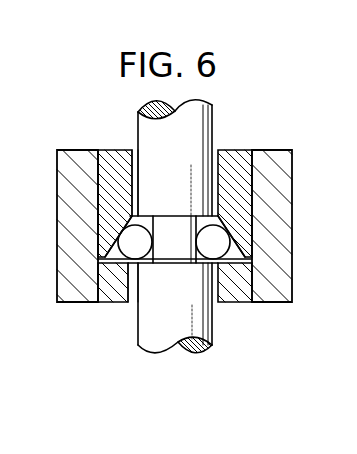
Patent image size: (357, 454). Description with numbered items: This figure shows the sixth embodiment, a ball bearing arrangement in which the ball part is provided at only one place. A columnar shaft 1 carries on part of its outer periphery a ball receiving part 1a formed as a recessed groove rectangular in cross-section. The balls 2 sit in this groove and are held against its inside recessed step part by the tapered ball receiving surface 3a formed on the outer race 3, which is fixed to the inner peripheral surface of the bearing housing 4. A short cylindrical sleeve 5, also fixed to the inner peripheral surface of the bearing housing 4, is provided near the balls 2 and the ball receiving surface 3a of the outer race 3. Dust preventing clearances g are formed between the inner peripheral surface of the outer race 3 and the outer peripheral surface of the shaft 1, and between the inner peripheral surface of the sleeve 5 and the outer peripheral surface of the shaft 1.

The shaft 1 is at (208, 124).
The ball receiving part 1a is at (195, 232).
The balls 2 is at (146, 262).
The outer race 3 is at (110, 156).
The ball receiving surface 3a is at (104, 257).
The bearing housing 4 is at (62, 205).
The sleeve 5 is at (108, 299).
The dust preventing clearances g is at (134, 153).